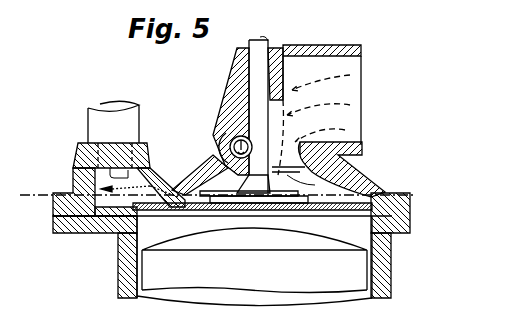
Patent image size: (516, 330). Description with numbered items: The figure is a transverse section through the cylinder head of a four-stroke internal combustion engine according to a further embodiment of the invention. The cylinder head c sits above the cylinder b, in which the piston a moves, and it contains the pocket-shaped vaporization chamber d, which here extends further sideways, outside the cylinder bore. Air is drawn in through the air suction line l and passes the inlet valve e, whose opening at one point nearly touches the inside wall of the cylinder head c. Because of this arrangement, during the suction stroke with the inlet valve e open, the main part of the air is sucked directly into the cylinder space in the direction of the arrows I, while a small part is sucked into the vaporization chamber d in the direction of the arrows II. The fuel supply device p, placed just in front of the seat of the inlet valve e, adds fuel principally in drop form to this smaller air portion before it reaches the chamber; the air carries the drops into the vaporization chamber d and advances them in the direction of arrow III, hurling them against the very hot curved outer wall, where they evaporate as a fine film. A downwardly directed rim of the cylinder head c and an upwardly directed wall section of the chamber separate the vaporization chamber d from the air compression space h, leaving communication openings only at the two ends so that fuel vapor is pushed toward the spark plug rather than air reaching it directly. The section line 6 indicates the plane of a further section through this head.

The section line 6- 6 is at (33, 165).
The air suction line l is at (103, 125).
The cylinder head c is at (55, 204).
The vaporization chamber d is at (105, 219).
The cylinder b is at (128, 268).
The arrow III is at (126, 197).
The piston a is at (333, 284).
The inlet valve e is at (295, 200).
The arrows I is at (226, 229).
The arrows II is at (243, 128).
The fuel supply device p is at (232, 140).
The air compression space h is at (350, 178).